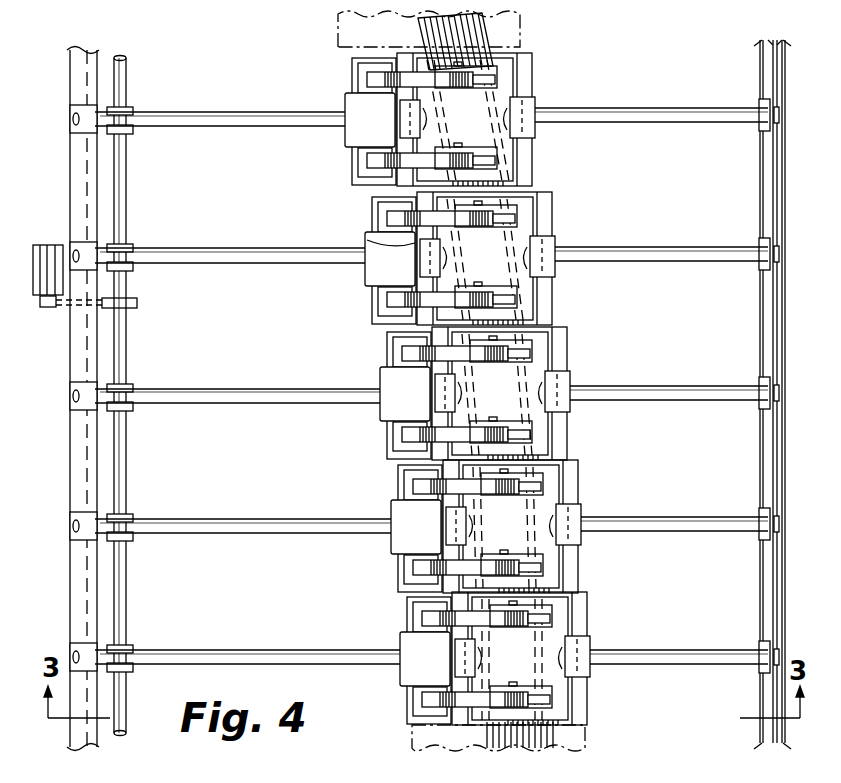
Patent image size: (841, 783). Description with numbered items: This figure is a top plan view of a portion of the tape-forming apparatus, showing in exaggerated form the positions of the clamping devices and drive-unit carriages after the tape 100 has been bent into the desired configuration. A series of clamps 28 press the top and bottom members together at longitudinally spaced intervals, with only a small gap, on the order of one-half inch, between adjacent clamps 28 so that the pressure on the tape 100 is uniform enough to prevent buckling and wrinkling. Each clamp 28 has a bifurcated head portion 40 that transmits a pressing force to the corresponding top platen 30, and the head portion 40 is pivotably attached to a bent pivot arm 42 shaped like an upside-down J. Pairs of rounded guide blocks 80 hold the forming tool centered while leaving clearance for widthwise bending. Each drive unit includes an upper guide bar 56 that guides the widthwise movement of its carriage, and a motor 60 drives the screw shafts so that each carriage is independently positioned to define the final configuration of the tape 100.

The tape 100 is at (490, 47).
The clamp 28 is at (367, 64).
The bifurcated head portion 40 is at (495, 79).
The top platen 30 is at (525, 212).
The bent pivot arm 42 is at (380, 243).
The guide blocks 80 is at (433, 380).
The upper guide bar 56 is at (205, 125).
The motor 60 is at (49, 246).